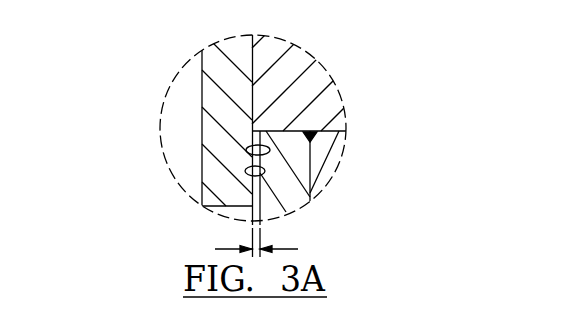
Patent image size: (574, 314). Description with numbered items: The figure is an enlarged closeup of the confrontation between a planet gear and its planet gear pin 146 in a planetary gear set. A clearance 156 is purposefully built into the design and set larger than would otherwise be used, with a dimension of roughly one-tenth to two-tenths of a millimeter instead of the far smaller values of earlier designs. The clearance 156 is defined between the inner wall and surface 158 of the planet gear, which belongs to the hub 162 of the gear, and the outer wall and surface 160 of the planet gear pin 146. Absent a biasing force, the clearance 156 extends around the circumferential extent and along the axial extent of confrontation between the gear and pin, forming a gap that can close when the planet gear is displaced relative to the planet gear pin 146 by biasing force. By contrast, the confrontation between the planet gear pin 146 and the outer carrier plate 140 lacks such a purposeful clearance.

The outer carrier plate 140 is at (306, 90).
The planet gear pin 146 is at (216, 100).
The clearance 156 is at (228, 249).
The inner wall and surface 158 is at (250, 173).
The outer wall and surface 160 is at (246, 150).
The hub 162 is at (297, 153).